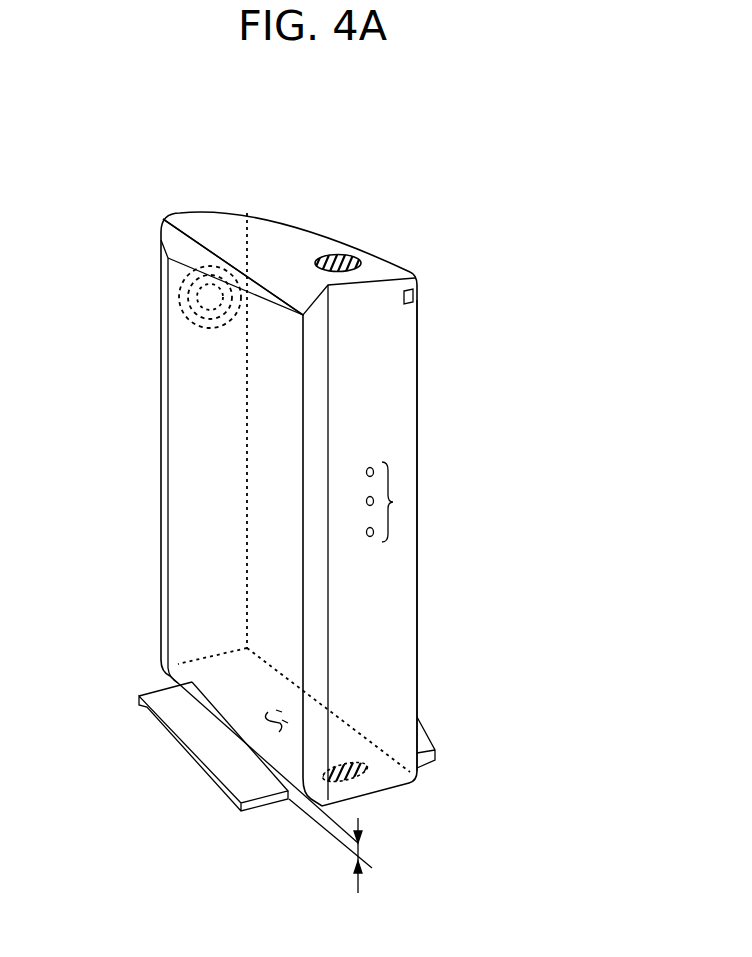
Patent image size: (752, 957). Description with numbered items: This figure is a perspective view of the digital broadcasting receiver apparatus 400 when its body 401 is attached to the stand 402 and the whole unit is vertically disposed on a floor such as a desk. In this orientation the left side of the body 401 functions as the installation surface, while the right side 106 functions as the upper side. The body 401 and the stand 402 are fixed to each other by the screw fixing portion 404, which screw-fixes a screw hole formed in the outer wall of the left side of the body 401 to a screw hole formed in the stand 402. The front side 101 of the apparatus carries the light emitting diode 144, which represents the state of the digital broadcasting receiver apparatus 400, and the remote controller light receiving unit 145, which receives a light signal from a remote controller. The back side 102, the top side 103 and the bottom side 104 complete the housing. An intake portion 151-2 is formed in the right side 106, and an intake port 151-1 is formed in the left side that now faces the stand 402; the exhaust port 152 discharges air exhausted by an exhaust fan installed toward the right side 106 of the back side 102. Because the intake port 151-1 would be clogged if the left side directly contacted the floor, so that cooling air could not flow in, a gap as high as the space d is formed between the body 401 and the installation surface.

The digital broadcasting receiver apparatus 400 is at (421, 123).
The front side 101 is at (400, 645).
The back side 102 is at (146, 380).
The top side 103 is at (183, 498).
The bottom side 104 is at (439, 345).
The right side 106 is at (272, 238).
The light emitting diode 144 is at (393, 502).
The remote controller light receiving unit 145 is at (418, 276).
The intake port 151-1 is at (363, 775).
The intake portion 151-2 is at (343, 252).
The exhaust port 152 is at (177, 290).
The body 401 is at (417, 422).
The stand 402 is at (203, 728).
The screw fixing portion 404 is at (260, 730).